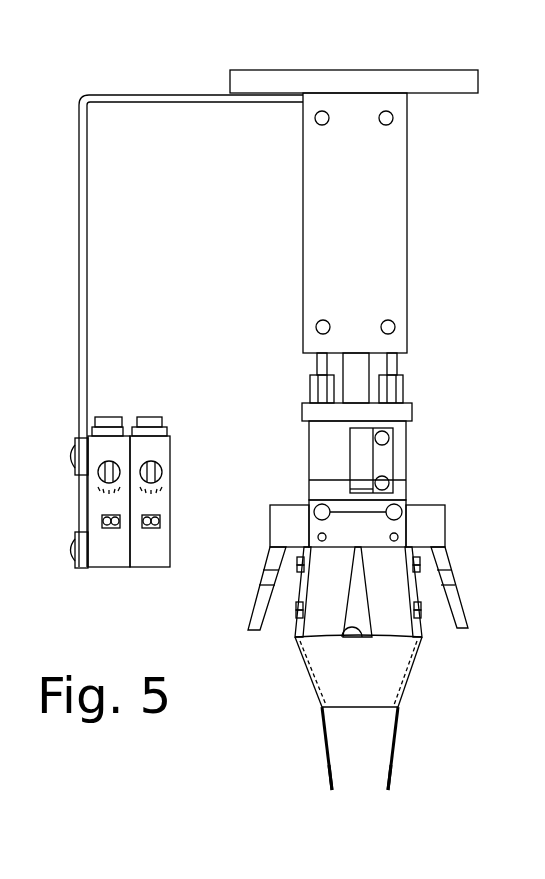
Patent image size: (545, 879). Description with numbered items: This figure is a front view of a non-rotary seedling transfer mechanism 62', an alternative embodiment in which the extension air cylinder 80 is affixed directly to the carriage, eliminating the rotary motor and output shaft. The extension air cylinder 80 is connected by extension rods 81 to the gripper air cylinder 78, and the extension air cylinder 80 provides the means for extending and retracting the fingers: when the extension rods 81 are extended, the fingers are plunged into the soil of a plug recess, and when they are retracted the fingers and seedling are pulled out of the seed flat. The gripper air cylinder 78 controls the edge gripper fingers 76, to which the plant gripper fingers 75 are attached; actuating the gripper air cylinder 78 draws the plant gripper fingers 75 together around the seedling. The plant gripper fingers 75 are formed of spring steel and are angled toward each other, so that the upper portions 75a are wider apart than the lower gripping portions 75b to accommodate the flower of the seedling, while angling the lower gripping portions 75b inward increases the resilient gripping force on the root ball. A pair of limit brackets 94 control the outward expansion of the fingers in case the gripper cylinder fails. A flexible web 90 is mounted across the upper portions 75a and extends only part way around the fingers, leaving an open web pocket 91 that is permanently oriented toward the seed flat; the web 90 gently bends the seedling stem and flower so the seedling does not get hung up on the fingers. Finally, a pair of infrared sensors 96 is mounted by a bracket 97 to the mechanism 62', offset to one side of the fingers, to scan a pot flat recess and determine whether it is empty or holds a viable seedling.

The seedling transfer mechanism 62' is at (374, 135).
The extension air cylinder 80 is at (395, 257).
The extension rods 81 is at (320, 388).
The gripper air cylinder 78 is at (397, 468).
The limit brackets 94 is at (445, 560).
The edge gripper fingers 76 is at (310, 622).
The web pocket 91 is at (345, 635).
The flexible web 90 is at (417, 667).
The plant gripper fingers 75 is at (395, 745).
The upper portions 75a is at (310, 677).
The lower gripping portions 75b is at (328, 772).
The bracket 97 is at (88, 295).
The infrared sensors 96 is at (127, 568).